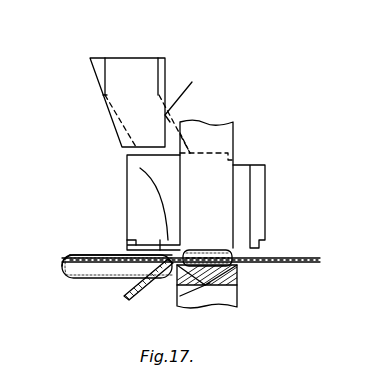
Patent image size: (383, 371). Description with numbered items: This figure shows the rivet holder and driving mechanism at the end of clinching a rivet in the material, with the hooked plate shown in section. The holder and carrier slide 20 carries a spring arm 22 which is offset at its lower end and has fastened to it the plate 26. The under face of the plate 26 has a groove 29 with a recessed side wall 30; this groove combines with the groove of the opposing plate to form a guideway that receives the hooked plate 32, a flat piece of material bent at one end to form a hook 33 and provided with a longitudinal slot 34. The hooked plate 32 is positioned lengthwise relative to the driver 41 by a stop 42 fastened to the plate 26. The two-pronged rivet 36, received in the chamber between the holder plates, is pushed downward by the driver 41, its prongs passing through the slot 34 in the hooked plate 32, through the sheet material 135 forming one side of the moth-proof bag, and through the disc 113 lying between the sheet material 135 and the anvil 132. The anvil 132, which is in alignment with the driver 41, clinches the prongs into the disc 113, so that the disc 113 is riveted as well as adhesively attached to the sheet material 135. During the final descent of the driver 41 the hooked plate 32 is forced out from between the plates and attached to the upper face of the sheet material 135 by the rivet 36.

The holder and carrier slide 20 is at (135, 62).
The spring arm 22 is at (187, 94).
The plate 26 is at (137, 170).
The groove 29 is at (143, 242).
The recessed side wall 30 is at (160, 245).
The hooked plate 32 is at (70, 256).
The hook 33 is at (92, 278).
The slot 34 is at (92, 255).
The two-pronged rivet 36 is at (232, 242).
The driver 41 is at (228, 135).
The stop 42 is at (262, 235).
The disc 113 is at (243, 270).
The anvil 132 is at (228, 300).
The sheet material 135 is at (305, 258).